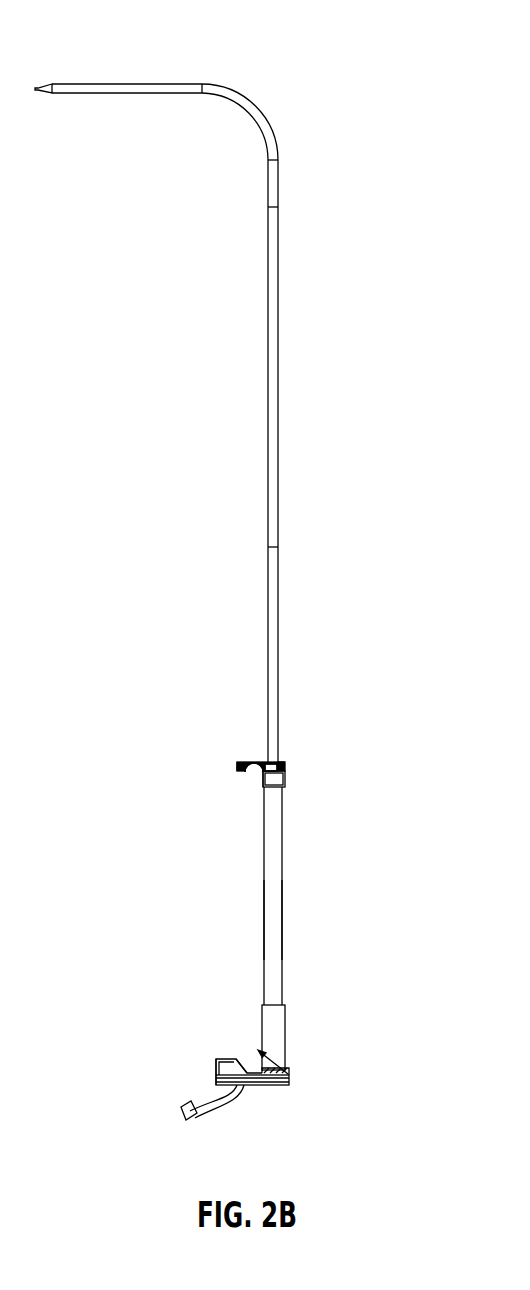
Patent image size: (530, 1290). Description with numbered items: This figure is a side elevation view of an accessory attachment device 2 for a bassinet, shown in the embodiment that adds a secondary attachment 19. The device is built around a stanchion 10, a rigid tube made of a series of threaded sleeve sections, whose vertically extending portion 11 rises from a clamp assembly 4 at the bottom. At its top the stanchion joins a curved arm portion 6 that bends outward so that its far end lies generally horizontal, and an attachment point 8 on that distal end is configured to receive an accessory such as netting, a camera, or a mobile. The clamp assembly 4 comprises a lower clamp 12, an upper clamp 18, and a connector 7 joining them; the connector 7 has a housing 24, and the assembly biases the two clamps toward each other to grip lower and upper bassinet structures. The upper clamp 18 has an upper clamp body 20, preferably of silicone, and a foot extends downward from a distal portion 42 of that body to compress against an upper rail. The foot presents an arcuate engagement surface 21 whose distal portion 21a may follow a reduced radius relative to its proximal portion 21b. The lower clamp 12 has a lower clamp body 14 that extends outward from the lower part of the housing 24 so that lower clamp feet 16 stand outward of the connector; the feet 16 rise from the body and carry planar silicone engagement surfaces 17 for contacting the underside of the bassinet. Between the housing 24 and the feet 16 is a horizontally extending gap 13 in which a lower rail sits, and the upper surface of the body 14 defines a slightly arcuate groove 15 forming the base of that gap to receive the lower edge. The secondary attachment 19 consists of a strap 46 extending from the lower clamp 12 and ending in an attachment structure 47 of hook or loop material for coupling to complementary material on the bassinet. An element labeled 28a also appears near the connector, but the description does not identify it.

The accessory attachment device 2 is at (378, 117).
The clamp assembly 4 is at (313, 921).
The arm portion 6 is at (278, 130).
The connector 7 is at (264, 912).
The attachment point 8 is at (38, 88).
The stanchion 10 is at (279, 412).
The vertically extending portion 11 is at (242, 380).
The lower clamp 12 is at (256, 1087).
The gap 13 is at (288, 1074).
The lower clamp body 14 is at (292, 1072).
The groove 15 is at (247, 1071).
The lower clamp feet 16 is at (216, 1066).
The engagement surfaces 17 is at (226, 1060).
The upper clamp 18 is at (279, 764).
The secondary attachment 19 is at (218, 1112).
The upper clamp body 20 is at (246, 762).
The engagement surface 21 is at (259, 763).
The distal portion of engagement surface 21a is at (240, 790).
The proximal portion of engagement surface 21b is at (265, 788).
The housing 24 is at (283, 843).
The connector body 28a is at (286, 1022).
The distal portion of upper clamp body 42 is at (270, 763).
The strap 46 is at (215, 1092).
The attachment structure 47 is at (182, 1104).